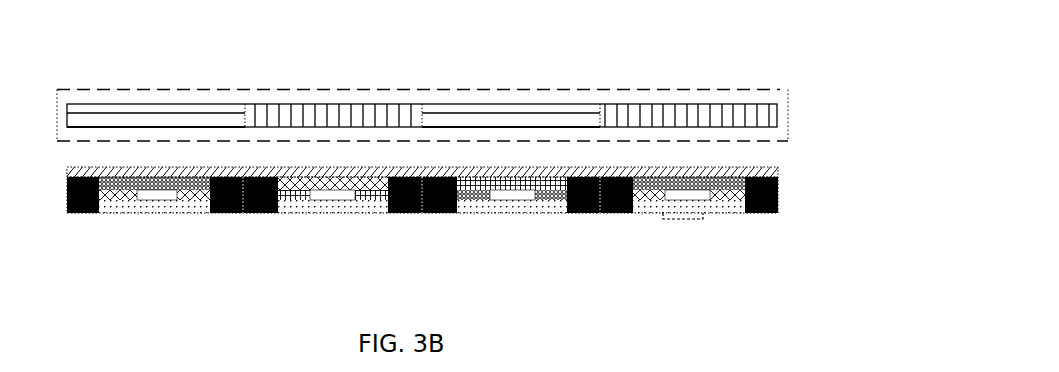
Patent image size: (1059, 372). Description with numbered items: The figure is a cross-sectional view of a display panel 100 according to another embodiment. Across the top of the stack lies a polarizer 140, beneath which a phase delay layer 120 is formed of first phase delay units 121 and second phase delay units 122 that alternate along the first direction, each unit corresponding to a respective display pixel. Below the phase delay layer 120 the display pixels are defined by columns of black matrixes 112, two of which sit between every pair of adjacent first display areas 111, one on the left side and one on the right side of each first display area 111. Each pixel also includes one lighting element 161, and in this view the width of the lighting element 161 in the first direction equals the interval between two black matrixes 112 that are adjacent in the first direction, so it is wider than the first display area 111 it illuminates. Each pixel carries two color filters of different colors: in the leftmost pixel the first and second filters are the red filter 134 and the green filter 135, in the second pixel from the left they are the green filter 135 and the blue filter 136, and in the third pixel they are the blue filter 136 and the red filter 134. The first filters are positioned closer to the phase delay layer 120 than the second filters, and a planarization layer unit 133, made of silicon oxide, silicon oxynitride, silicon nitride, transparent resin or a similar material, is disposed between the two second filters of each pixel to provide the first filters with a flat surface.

The display panel 100 is at (755, 50).
The phase delay layer 120 is at (472, 104).
The first phase delay unit 121 is at (122, 109).
The second phase delay unit 122 is at (477, 104).
The polarizer 140 is at (777, 171).
The black matrix 112 is at (777, 201).
The first display area 111 is at (705, 218).
The planarization layer unit 133 is at (333, 197).
The red filter 134 is at (157, 183).
The green filter 135 is at (118, 197).
The blue filter 136 is at (293, 195).
The lighting element 161 is at (172, 208).